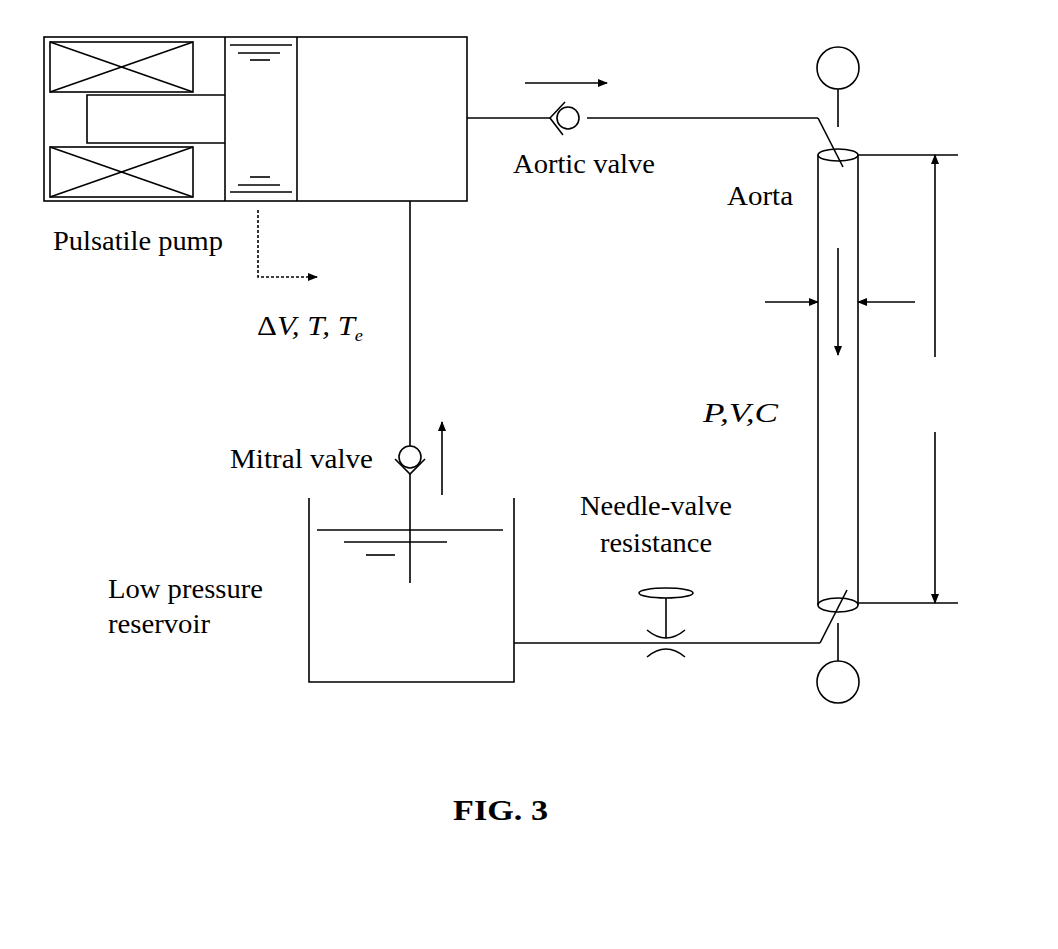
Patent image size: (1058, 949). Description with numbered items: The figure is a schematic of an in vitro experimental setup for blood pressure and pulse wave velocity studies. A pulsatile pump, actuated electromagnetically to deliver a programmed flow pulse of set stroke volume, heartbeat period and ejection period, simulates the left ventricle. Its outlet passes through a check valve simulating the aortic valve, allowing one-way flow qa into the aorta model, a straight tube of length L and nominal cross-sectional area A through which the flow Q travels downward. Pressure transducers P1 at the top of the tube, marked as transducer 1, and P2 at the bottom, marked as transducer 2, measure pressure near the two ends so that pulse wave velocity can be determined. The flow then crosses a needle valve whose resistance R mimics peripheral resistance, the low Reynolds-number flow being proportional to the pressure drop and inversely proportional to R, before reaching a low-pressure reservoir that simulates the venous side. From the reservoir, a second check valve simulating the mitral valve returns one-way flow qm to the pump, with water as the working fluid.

The pressure transducer P1 1 is at (857, 87).
The pressure transducer P2 2 is at (857, 663).
The aortic valve flow qa is at (566, 56).
The mitral valve flow qm is at (461, 458).
The nominal cross-sectional area A is at (824, 303).
The flow through aorta Q is at (838, 324).
The aorta tube length L is at (908, 379).
The valve resistance R is at (705, 680).